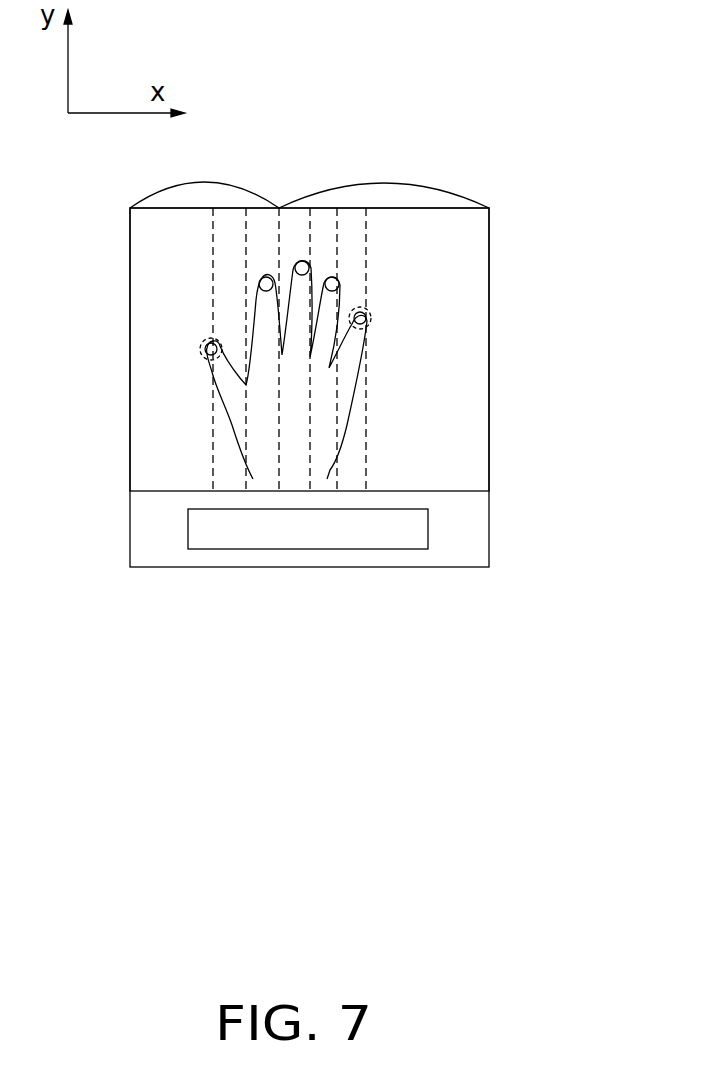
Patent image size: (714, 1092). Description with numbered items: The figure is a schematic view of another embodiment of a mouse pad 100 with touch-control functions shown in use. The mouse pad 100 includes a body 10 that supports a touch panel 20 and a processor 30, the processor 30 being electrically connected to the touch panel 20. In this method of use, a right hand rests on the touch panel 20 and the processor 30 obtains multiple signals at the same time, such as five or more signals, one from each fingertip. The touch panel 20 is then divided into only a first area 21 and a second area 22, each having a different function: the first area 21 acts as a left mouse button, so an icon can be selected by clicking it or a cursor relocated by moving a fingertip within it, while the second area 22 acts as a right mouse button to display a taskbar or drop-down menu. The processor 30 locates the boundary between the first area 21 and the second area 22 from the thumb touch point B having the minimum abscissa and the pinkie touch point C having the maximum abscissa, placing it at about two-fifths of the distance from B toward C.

The mouse pad 100 is at (328, 84).
The body 10 is at (489, 535).
The touch panel 20 is at (489, 266).
The first area 21 is at (204, 321).
The second area 22 is at (384, 319).
The processor 30 is at (409, 530).